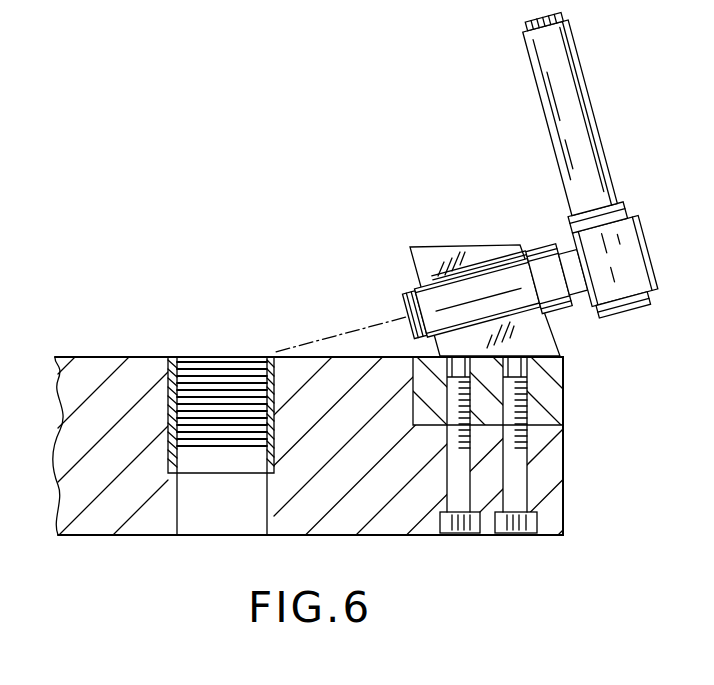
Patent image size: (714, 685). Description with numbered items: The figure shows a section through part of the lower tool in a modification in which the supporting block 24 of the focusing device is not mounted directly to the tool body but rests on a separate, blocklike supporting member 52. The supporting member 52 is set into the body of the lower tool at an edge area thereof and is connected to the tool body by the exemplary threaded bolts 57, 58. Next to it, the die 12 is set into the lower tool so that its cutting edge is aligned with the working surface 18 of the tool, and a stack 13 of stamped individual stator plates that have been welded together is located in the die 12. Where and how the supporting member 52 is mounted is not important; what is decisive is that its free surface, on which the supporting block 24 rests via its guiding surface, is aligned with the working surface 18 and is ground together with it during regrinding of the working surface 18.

The working surface 18 is at (102, 356).
The die 12 is at (174, 356).
The stack 13 is at (233, 356).
The supporting block 24 is at (450, 228).
The supporting member 52 is at (545, 383).
The threaded bolt 57 is at (464, 536).
The threaded bolt 58 is at (519, 536).